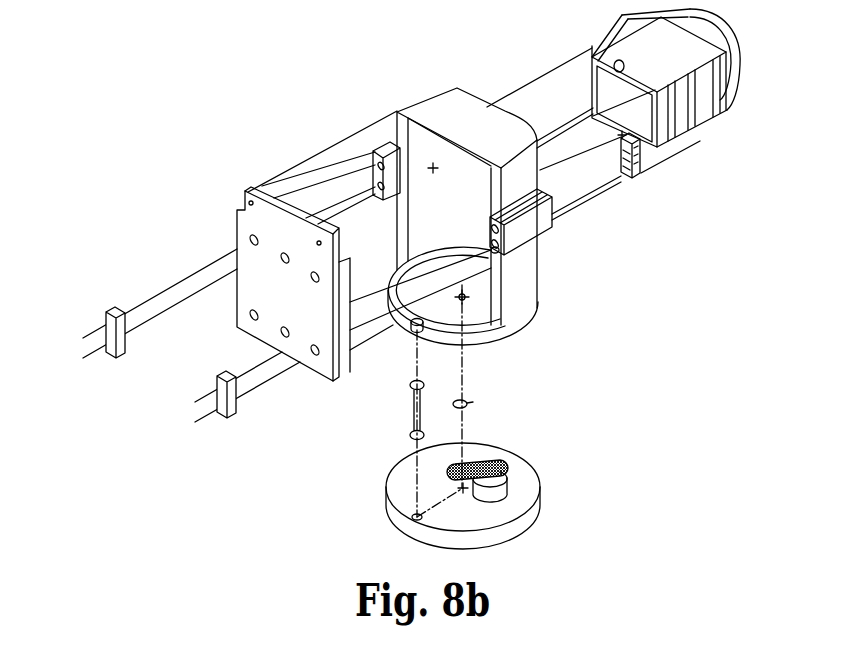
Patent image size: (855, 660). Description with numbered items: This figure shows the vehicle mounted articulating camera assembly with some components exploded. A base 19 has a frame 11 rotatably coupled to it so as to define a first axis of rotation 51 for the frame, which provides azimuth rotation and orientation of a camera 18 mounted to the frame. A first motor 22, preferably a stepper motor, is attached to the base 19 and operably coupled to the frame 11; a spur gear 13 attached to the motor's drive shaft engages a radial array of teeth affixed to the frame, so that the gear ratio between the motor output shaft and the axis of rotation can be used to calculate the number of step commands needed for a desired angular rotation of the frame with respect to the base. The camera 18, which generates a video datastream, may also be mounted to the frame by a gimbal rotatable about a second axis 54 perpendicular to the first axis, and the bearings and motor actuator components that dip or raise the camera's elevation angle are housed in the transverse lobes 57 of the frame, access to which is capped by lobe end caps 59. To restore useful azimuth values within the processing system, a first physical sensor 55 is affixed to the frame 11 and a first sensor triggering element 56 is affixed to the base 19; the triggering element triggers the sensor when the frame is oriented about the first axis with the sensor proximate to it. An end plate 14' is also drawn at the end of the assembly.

The camera 18 is at (591, 46).
The frame 11 is at (430, 104).
The end plate 14' is at (255, 273).
The lobe end caps 59 is at (118, 305).
The second axis 54 is at (492, 205).
The transverse lobes 57 is at (535, 225).
The first axis of rotation 51 is at (468, 403).
The first physical sensor 55 is at (410, 388).
The first sensor triggering element 56 is at (408, 437).
The spur gear 13 is at (490, 463).
The first motor 22 is at (507, 472).
The base 19 is at (535, 512).